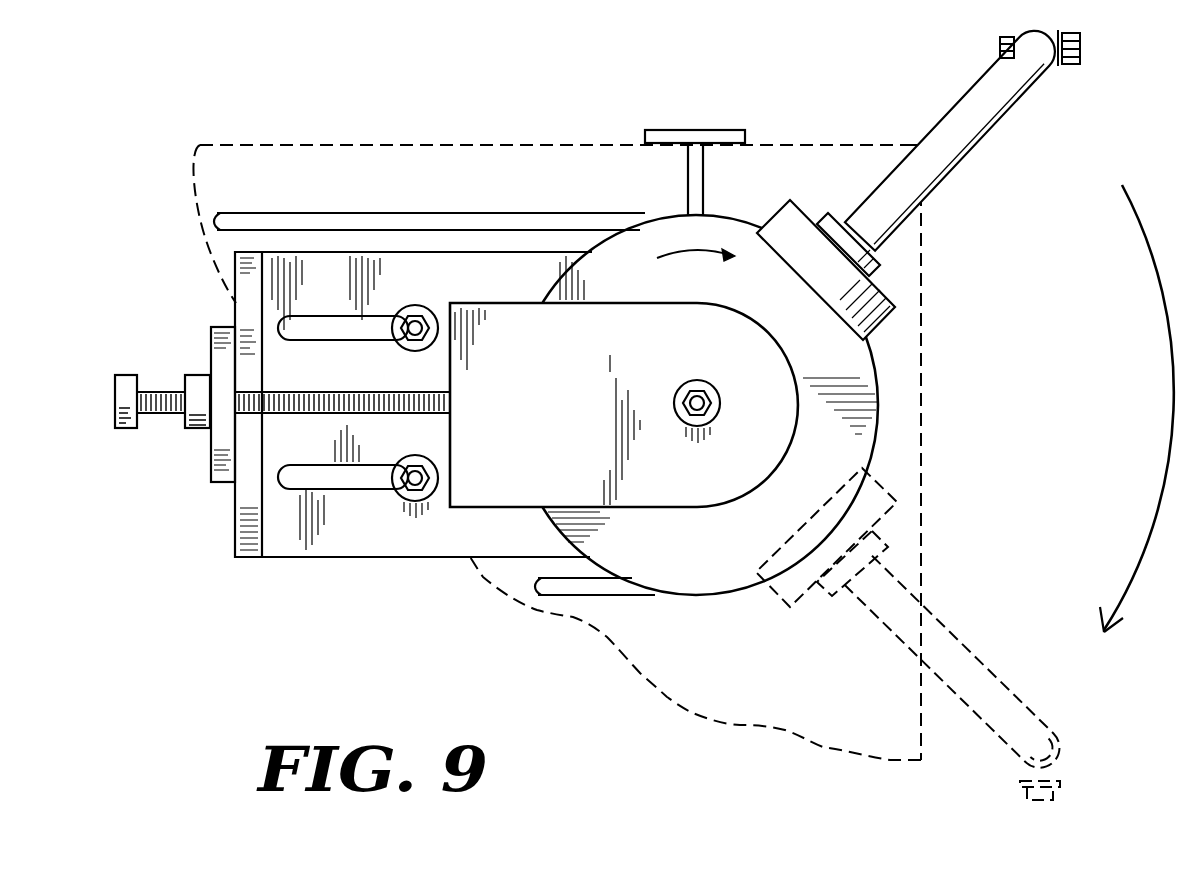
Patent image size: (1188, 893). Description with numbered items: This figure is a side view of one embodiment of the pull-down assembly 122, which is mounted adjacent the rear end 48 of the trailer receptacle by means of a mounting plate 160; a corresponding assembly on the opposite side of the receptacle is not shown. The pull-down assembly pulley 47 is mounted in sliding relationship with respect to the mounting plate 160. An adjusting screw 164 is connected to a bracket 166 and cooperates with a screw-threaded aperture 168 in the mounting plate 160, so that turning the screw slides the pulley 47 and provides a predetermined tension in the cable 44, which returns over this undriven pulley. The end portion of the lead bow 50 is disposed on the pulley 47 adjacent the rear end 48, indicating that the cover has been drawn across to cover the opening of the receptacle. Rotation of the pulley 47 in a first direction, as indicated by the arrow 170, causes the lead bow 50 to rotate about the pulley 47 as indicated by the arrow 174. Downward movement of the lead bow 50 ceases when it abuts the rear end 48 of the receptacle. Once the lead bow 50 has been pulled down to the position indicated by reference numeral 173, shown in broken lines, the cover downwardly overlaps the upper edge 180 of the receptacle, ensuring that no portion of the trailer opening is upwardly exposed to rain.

The cable loop 44 is at (540, 222).
The pull-down assembly pulley 47 is at (706, 556).
The rear end of the receptacle 48 is at (923, 340).
The lead bow 50 is at (993, 122).
The pull-down assembly 122 is at (753, 622).
The mounting plate 160 is at (252, 547).
The adjusting screw 164 is at (333, 392).
The bracket 166 is at (572, 417).
The screw-threaded aperture 168 is at (238, 388).
The arrow indicating pulley rotation 170 is at (688, 258).
The pulled-down position of the lead bow 173 is at (997, 707).
The arrow indicating lead bow rotation 174 is at (1167, 448).
The upper edge of the receptacle 180 is at (925, 141).